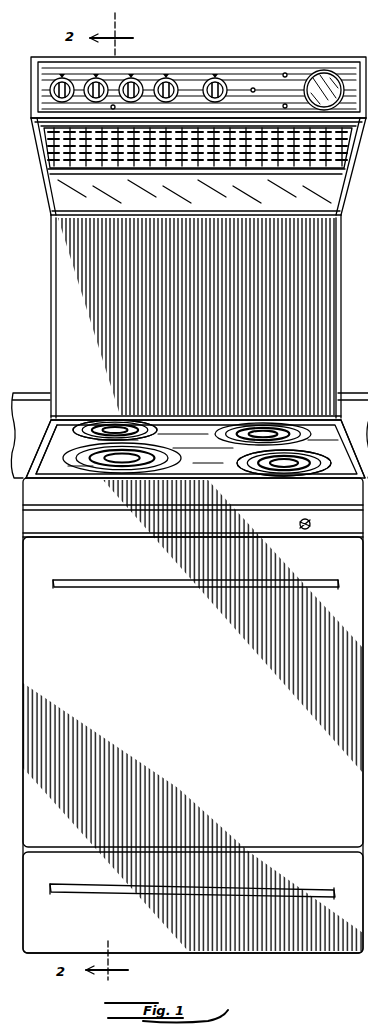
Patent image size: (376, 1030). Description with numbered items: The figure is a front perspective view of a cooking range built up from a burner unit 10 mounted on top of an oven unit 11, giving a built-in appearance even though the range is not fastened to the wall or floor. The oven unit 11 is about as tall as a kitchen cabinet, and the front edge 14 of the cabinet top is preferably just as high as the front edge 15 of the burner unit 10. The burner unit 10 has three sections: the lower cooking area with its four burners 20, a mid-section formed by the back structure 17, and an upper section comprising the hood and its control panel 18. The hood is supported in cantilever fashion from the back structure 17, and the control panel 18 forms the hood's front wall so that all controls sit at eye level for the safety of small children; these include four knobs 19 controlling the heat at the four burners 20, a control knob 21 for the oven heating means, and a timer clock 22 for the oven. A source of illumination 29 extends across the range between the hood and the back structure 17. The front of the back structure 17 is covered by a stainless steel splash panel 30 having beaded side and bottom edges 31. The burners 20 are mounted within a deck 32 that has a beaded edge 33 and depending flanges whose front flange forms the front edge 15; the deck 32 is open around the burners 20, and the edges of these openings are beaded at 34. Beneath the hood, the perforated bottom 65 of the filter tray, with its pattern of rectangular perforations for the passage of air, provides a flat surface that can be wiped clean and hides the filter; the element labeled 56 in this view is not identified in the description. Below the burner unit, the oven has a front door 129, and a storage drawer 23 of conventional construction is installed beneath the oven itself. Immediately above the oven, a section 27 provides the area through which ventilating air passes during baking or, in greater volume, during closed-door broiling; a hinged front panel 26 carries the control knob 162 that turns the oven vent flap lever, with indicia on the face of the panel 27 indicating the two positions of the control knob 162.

The burner unit 10 is at (26, 142).
The oven unit 11 is at (162, 672).
The front edge of cabinet top 14 is at (8, 482).
The front edge of burner unit 15 is at (164, 472).
The back structure 17 is at (312, 264).
The control panel 18 is at (248, 66).
The knobs 19 is at (123, 70).
The burners 20 is at (140, 426).
The oven control knob 21 is at (207, 70).
The timer clock 22 is at (313, 68).
The storage drawer 23 is at (80, 921).
The front panel 26 is at (148, 512).
The section above oven 27 is at (270, 516).
The source of illumination 29 is at (65, 185).
The splash panel 30 is at (55, 287).
The beaded edges of splash panel 31 is at (40, 265).
The deck 32 is at (50, 460).
The beaded edge of deck 33 is at (48, 420).
The beaded edges of burner openings 34 is at (70, 424).
The vent grille 56 is at (52, 153).
The tray bottom 65 is at (44, 134).
The front door 129 is at (219, 745).
The control knob 162 is at (304, 517).